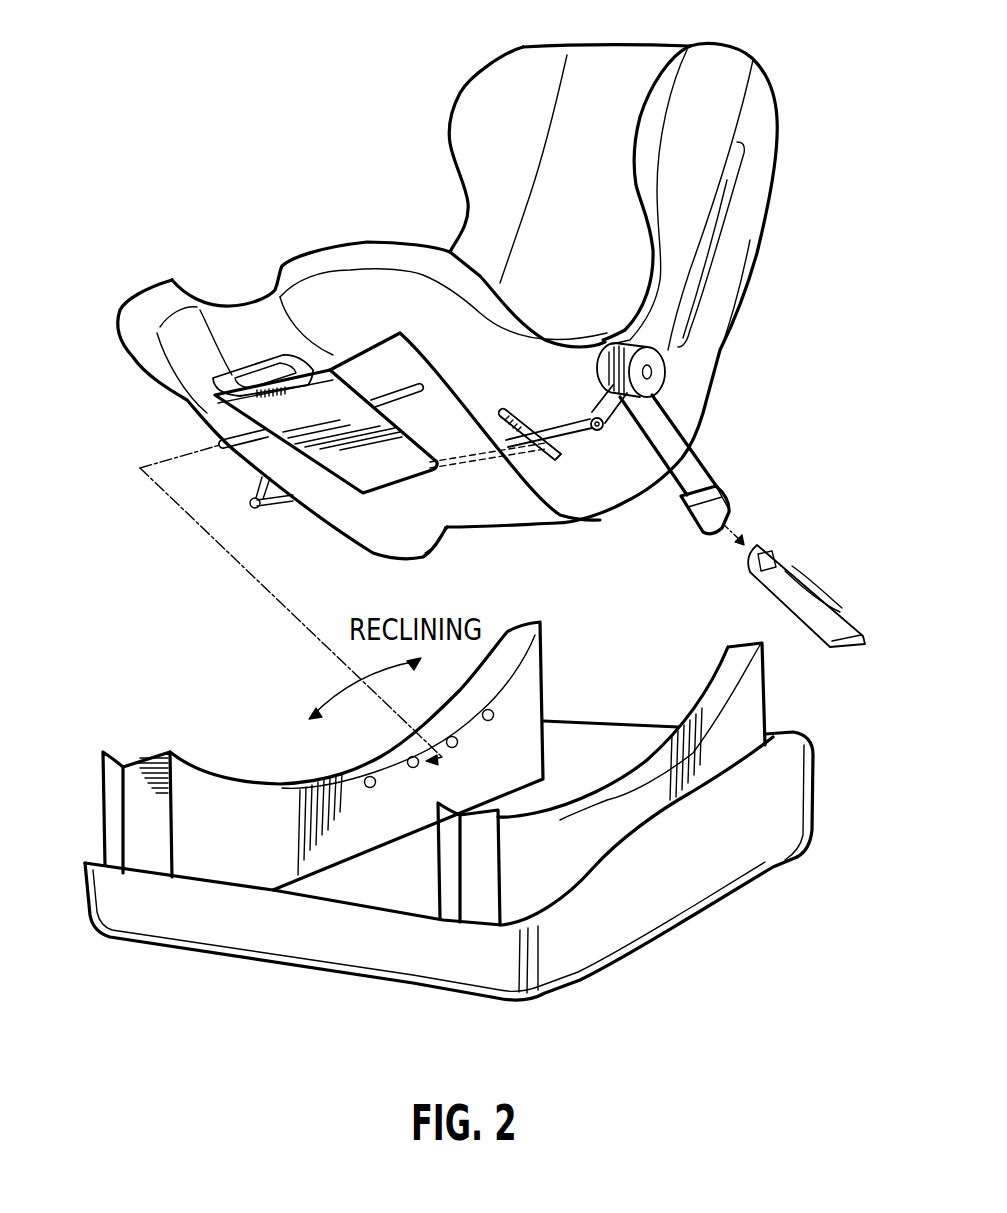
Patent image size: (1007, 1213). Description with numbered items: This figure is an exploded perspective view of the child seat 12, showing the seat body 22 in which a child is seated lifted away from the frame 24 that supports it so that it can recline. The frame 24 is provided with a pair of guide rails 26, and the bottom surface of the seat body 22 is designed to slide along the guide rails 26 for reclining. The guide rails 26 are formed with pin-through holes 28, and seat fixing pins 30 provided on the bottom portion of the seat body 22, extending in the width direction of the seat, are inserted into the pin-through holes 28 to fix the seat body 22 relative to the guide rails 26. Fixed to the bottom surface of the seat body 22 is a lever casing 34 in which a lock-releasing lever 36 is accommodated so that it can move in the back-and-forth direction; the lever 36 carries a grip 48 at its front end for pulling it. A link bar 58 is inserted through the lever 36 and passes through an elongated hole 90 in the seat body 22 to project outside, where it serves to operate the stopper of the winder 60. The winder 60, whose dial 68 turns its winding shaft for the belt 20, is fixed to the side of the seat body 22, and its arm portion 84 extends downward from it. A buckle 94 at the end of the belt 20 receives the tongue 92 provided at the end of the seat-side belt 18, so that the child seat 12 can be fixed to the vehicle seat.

The child seat 12 is at (201, 138).
The seat-side belt 18 is at (855, 654).
The belt 20 is at (685, 458).
The seat body 22 is at (447, 143).
The frame 24 is at (570, 960).
The guide rails 26 is at (640, 800).
The pin-through holes 28 is at (365, 780).
The seat fixing pins 30 is at (393, 390).
The lever casing 34 is at (343, 463).
The lock-releasing lever 36 is at (252, 357).
The grip 48 is at (200, 345).
The link bar 58 is at (553, 432).
The winder 60 is at (610, 355).
The dial 68 is at (657, 380).
The arm portion 84 is at (614, 422).
The elongated hole 90 is at (550, 447).
The tongue 92 is at (750, 570).
The buckle 94 is at (730, 490).